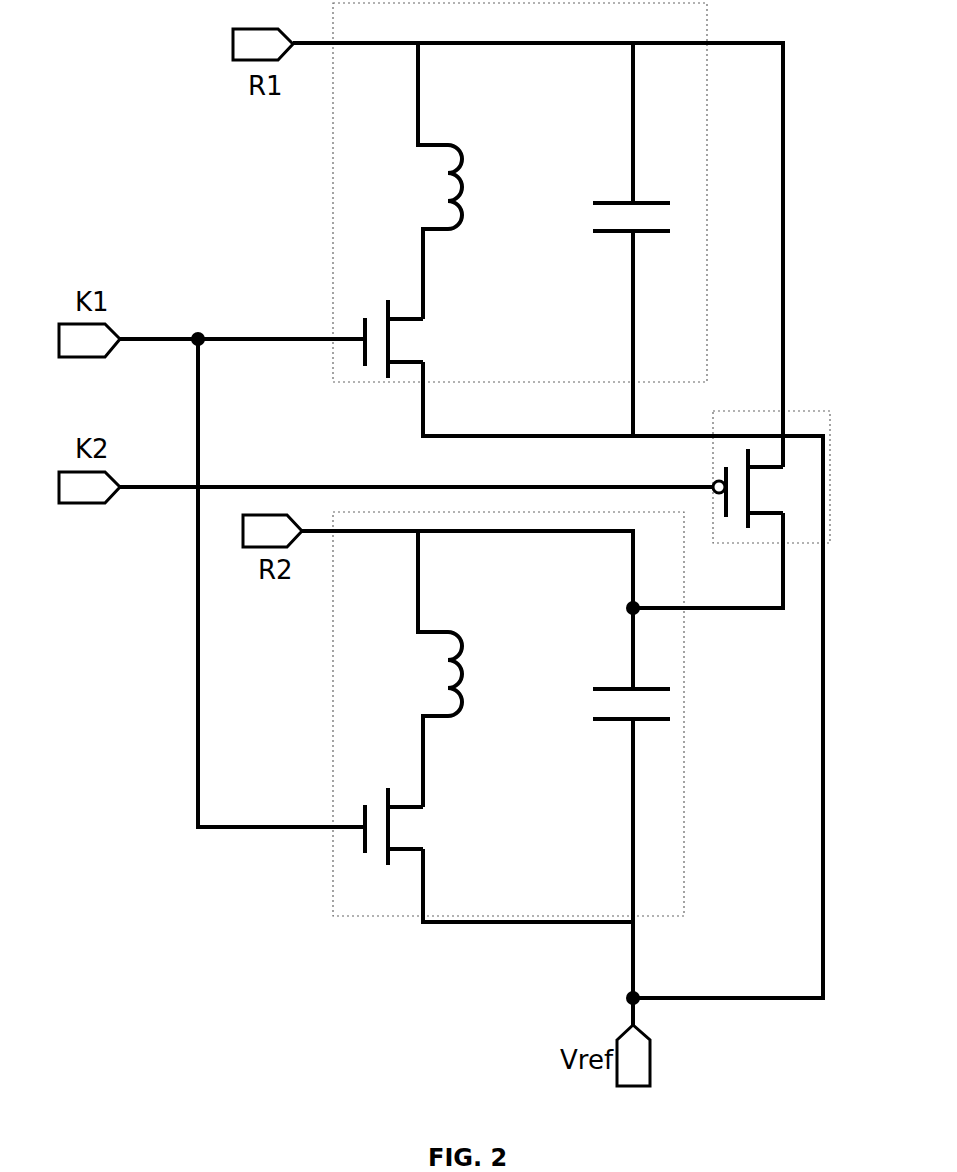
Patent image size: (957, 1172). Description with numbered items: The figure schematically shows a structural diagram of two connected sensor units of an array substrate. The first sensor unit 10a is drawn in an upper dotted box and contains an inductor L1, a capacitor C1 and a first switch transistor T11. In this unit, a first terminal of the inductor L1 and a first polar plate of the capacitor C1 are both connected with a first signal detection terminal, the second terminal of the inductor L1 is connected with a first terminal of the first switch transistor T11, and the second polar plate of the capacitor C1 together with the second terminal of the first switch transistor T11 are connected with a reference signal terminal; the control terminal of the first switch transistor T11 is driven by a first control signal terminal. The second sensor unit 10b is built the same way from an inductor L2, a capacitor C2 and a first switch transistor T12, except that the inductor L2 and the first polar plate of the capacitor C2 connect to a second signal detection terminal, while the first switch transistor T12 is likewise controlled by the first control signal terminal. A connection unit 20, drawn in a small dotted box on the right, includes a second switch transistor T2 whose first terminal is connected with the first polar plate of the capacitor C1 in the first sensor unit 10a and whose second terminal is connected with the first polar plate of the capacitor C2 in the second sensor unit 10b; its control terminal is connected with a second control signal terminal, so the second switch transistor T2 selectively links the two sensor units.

The first sensor unit 10a is at (713, 262).
The second sensor unit 10b is at (680, 837).
The connection unit 20 is at (803, 410).
The inductor L1 is at (457, 181).
The capacitor C1 is at (645, 239).
The first switch transistor T11 is at (419, 339).
The second switch transistor T2 is at (763, 488).
The inductor L2 is at (457, 669).
The capacitor C2 is at (613, 703).
The first switch transistor T12 is at (419, 826).